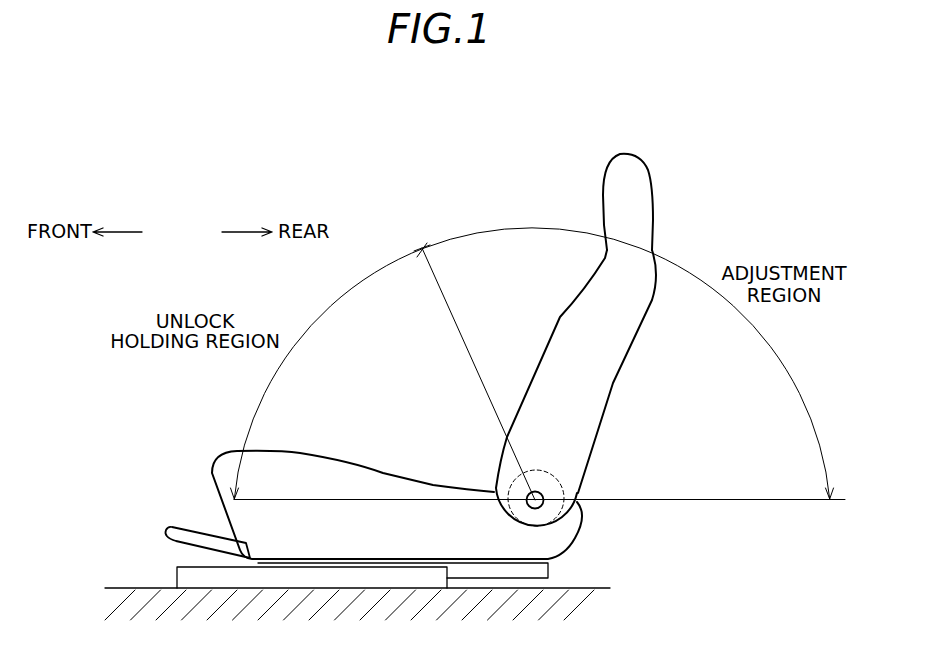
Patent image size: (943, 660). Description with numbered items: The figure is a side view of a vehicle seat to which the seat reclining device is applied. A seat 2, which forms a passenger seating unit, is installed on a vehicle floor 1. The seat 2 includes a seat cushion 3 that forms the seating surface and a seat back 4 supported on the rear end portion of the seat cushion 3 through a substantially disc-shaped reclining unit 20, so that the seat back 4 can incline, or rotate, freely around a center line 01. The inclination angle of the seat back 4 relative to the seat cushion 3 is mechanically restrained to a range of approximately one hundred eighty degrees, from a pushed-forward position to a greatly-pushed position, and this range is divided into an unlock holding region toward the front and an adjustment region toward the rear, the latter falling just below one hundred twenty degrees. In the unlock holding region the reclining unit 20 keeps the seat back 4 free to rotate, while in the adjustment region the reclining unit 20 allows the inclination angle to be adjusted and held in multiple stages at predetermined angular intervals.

The vehicle floor 1 is at (125, 588).
The seat 2 is at (429, 326).
The seat cushion 3 is at (367, 477).
The seat back 4 is at (593, 389).
The center line 01 is at (526, 494).
The reclining unit 20 is at (567, 486).